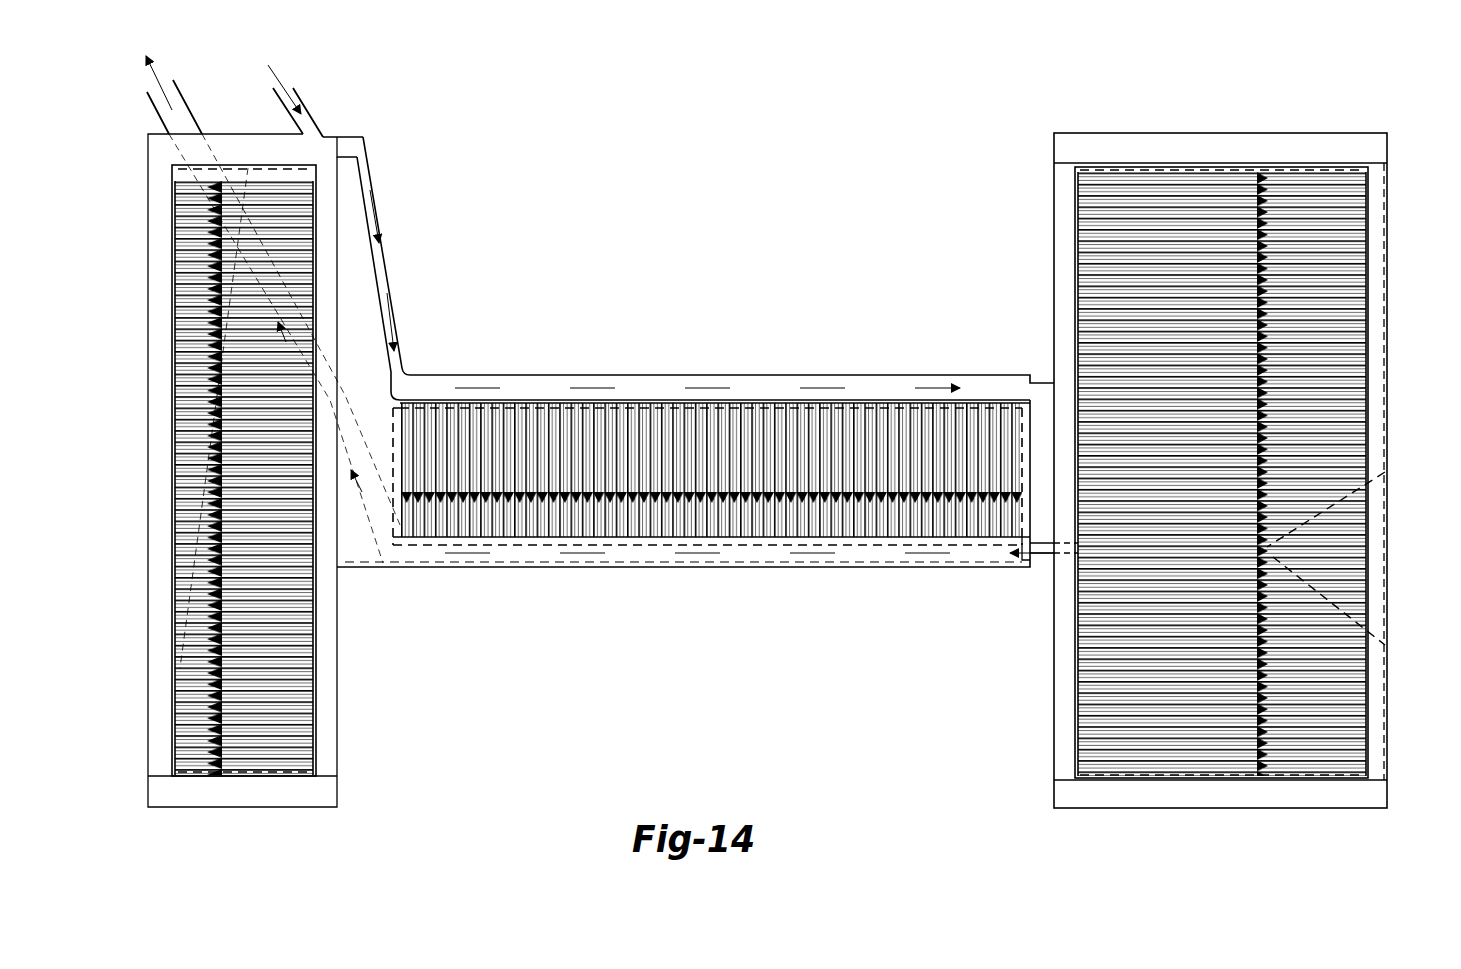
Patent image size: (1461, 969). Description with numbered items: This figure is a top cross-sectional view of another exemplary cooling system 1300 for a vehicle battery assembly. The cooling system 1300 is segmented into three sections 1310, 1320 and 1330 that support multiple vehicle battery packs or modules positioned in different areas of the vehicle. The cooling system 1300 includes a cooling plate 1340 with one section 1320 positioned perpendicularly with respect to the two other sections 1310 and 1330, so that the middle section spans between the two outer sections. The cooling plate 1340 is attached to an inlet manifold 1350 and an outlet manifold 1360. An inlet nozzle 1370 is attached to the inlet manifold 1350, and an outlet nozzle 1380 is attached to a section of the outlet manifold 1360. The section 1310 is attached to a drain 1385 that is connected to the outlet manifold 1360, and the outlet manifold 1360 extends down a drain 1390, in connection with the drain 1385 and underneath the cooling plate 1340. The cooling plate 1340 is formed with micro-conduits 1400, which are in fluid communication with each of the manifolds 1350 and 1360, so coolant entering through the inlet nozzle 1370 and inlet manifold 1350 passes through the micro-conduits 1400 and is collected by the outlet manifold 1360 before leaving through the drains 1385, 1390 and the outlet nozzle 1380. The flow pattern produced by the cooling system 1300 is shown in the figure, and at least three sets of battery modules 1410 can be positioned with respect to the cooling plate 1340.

The cooling system 1300 is at (710, 270).
The section 1310 is at (262, 830).
The section 1320 is at (603, 368).
The section 1330 is at (1212, 114).
The cooling plate 1340 is at (356, 553).
The inlet manifold 1350 is at (366, 146).
The outlet manifold 1360 is at (1044, 558).
The inlet nozzle 1370 is at (316, 112).
The outlet nozzle 1380 is at (180, 88).
The drain 1385 is at (172, 657).
The drain 1390 is at (1367, 591).
The micro-conduits 1400 is at (762, 538).
The battery modules 1410 is at (780, 406).